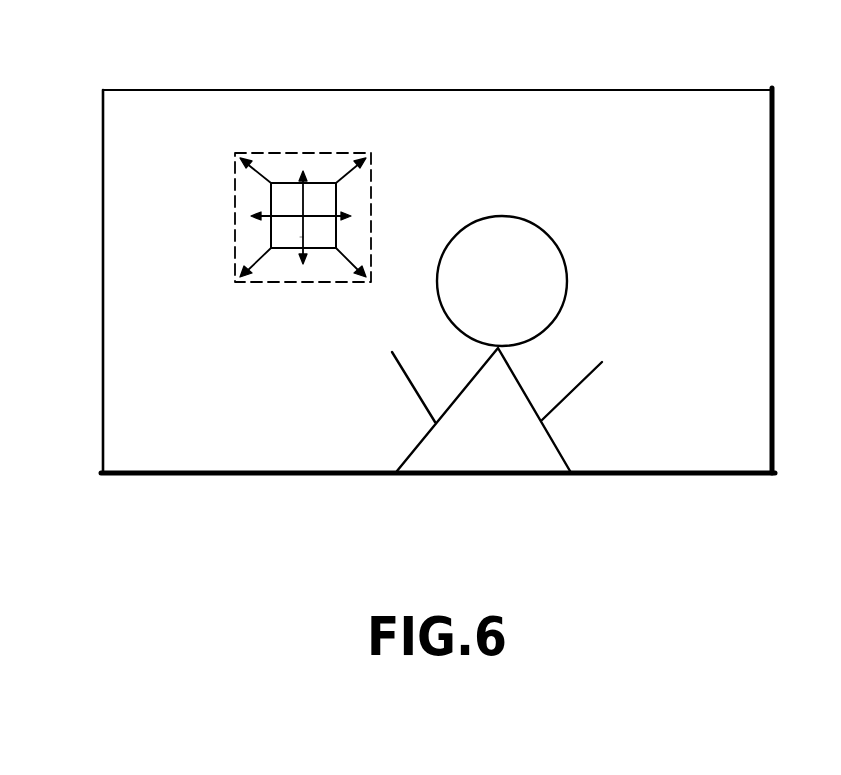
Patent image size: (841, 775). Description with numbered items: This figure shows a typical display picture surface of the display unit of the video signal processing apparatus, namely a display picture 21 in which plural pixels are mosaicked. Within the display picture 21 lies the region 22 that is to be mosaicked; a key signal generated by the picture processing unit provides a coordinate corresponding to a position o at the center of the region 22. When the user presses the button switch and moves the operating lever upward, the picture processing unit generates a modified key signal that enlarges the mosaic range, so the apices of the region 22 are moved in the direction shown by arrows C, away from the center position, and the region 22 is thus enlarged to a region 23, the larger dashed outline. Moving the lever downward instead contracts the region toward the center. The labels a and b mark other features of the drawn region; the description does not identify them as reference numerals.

The display picture 21 is at (346, 485).
The region 22 is at (278, 228).
The region 23 is at (329, 152).
The arrows C is at (256, 166).
The vertical/horizontal motion arrows a is at (282, 215).
The block point b is at (300, 237).